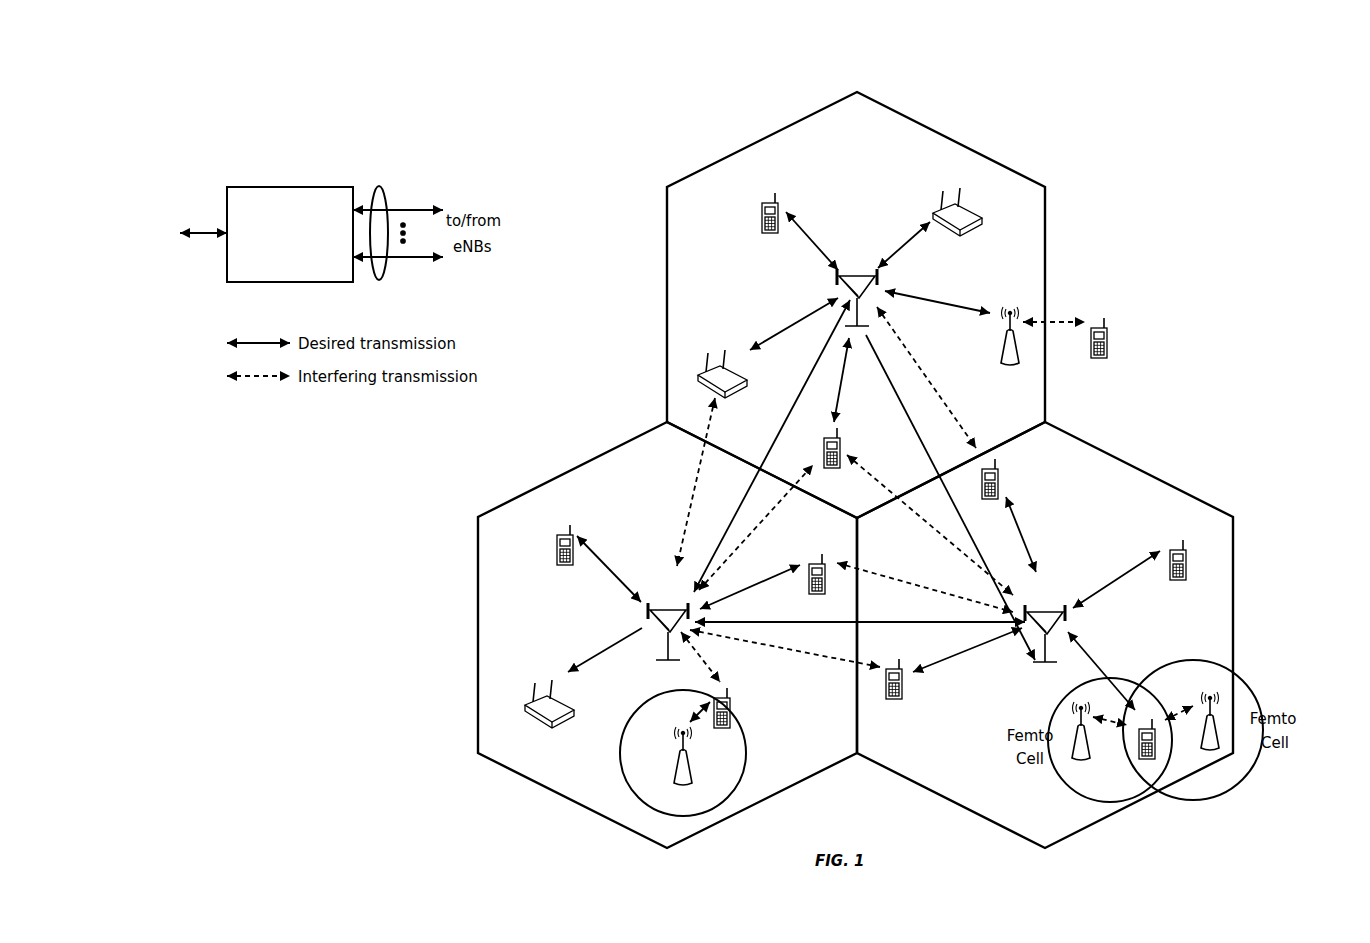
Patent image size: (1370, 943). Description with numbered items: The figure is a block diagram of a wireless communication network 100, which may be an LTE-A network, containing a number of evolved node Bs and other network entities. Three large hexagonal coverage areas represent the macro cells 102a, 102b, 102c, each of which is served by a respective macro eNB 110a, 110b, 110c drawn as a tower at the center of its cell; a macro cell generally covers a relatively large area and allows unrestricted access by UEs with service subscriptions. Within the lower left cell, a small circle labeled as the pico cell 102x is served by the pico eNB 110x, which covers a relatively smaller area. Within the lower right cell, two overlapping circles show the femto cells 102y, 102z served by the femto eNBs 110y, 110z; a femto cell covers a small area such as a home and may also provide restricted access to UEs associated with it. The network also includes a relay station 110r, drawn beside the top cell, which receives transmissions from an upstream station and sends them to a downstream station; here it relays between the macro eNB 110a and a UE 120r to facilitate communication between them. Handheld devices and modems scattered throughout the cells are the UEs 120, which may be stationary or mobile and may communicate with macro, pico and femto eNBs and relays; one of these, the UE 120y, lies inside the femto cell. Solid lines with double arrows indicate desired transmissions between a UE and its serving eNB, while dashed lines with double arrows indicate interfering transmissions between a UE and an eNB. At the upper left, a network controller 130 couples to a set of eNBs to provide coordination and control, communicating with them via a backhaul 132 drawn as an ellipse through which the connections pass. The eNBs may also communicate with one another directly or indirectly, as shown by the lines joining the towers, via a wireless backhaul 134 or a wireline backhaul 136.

The wireless communication network 100 is at (1172, 154).
The macro cell 102a is at (952, 139).
The macro cell 102b is at (554, 467).
The macro cell 102c is at (1144, 467).
The pico cell 102x is at (641, 701).
The femto cell 102y is at (1050, 704).
The femto cell 102z is at (1190, 656).
The macro eNB 110a is at (851, 272).
The macro eNB 110b is at (667, 603).
The macro eNB 110c is at (1047, 603).
The relay station 110r is at (994, 353).
The pico eNB 110x is at (690, 775).
The femto eNB 110y is at (1090, 752).
The femto eNB 110z is at (1218, 742).
The user equipment 120 is at (758, 210).
The UE 120r is at (1110, 360).
The UE 120y is at (1135, 758).
The network controller 130 is at (288, 185).
The backhaul 132 is at (389, 198).
The wireless backhaul 134 is at (772, 443).
The wireline backhaul 136 is at (910, 446).